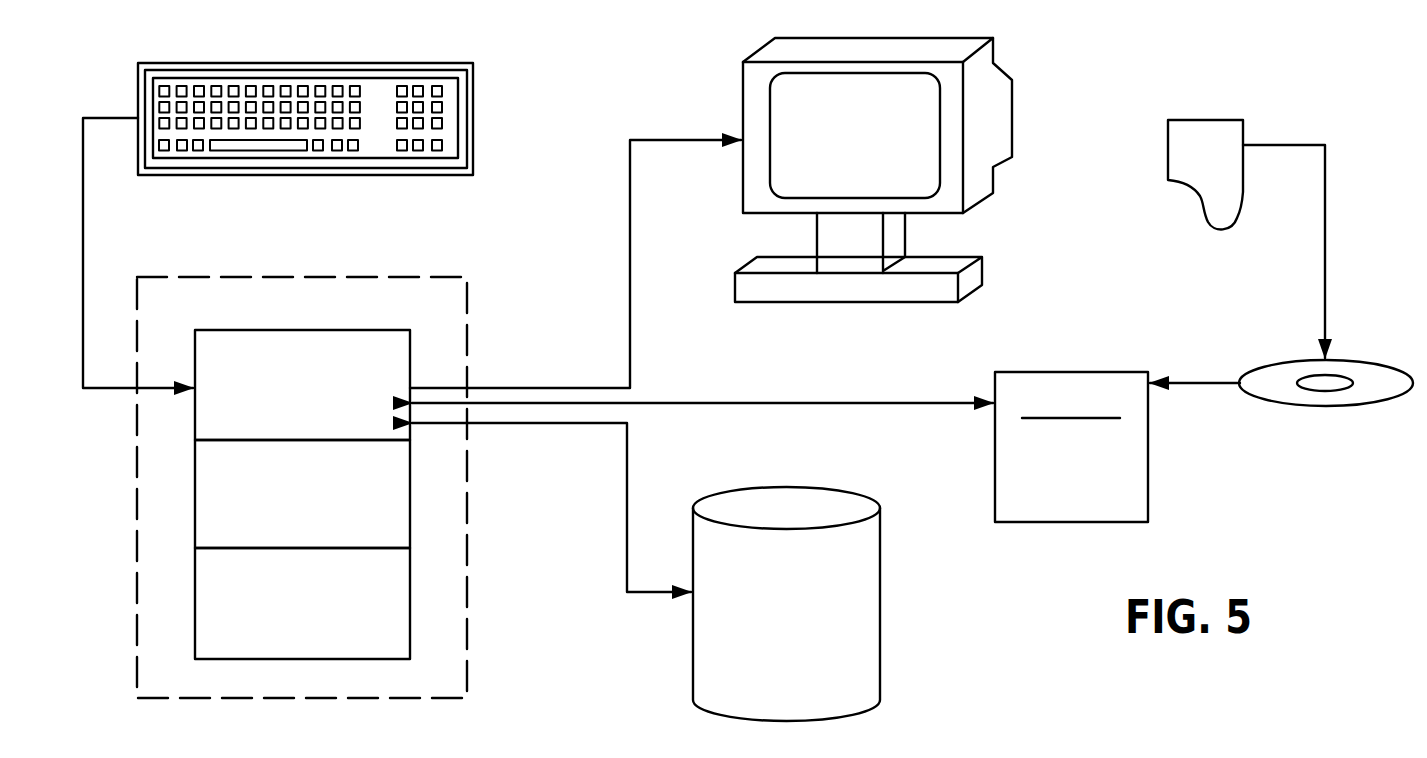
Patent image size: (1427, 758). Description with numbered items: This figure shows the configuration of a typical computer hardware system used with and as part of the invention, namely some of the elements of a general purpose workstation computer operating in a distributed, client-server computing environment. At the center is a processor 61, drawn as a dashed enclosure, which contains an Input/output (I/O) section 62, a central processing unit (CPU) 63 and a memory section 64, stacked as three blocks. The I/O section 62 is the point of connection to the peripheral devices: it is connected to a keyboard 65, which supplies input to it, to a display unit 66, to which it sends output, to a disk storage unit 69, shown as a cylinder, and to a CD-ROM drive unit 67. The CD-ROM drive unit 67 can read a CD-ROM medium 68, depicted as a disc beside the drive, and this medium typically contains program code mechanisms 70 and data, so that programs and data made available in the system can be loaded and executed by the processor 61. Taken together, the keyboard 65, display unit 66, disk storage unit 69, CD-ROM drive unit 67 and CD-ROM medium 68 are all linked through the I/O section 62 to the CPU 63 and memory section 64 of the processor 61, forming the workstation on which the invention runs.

The processor 61 is at (403, 275).
The Input/output (I/O) section 62 is at (248, 347).
The central processing unit (CPU) 63 is at (397, 503).
The memory section 64 is at (397, 615).
The keyboard 65 is at (473, 102).
The display unit 66 is at (743, 98).
The CD-ROM drive unit 67 is at (1067, 372).
The CD-ROM medium 68 is at (1277, 360).
The disk storage unit 69 is at (880, 588).
The program code mechanisms 70 is at (1168, 150).